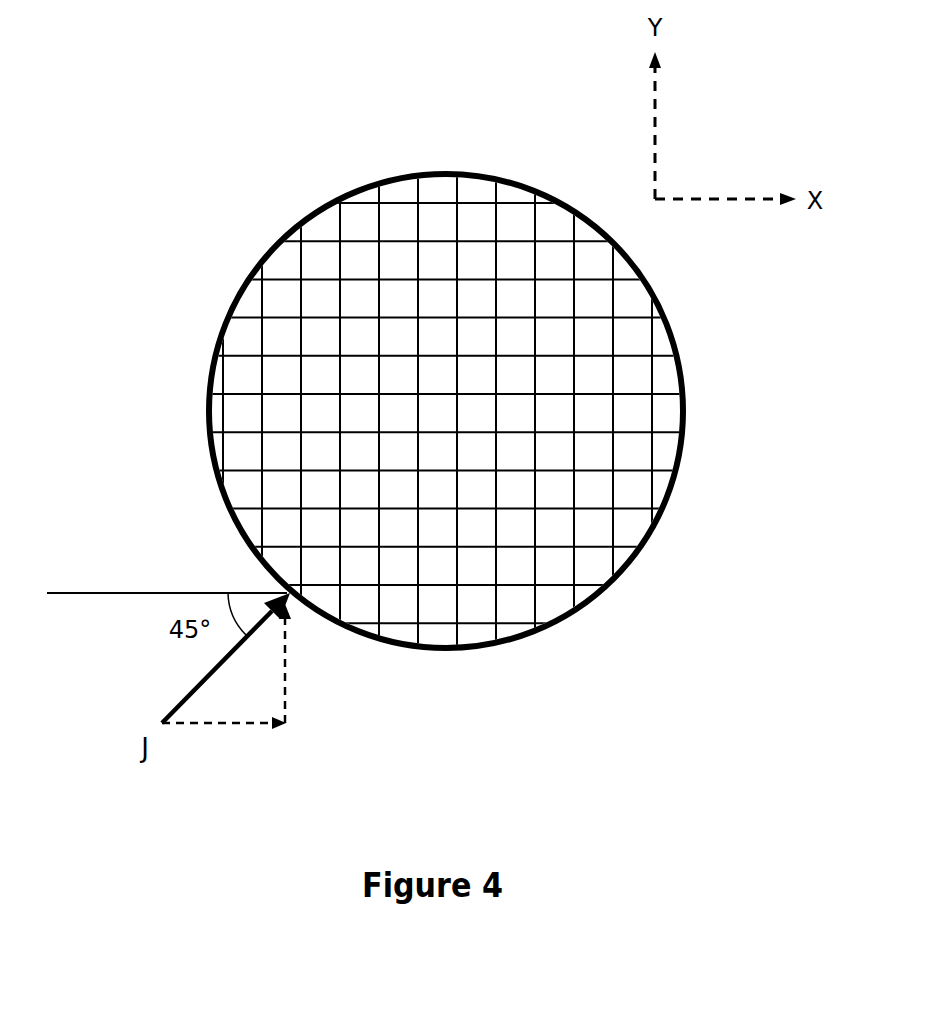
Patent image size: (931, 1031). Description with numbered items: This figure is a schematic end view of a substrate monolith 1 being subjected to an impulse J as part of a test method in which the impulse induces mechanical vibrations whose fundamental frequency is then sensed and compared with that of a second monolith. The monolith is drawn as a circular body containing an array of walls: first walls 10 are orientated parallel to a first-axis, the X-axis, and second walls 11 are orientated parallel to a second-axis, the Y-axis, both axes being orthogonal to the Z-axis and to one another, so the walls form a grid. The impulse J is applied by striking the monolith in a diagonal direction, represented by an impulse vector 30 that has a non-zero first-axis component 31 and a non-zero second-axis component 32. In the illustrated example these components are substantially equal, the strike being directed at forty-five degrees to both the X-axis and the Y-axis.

The substrate monolith 1 is at (675, 482).
The first walls 10 is at (555, 580).
The second walls 11 is at (575, 563).
The impulse vector 30 is at (217, 665).
The first-axis component 31 is at (235, 725).
The second-axis component 32 is at (287, 673).